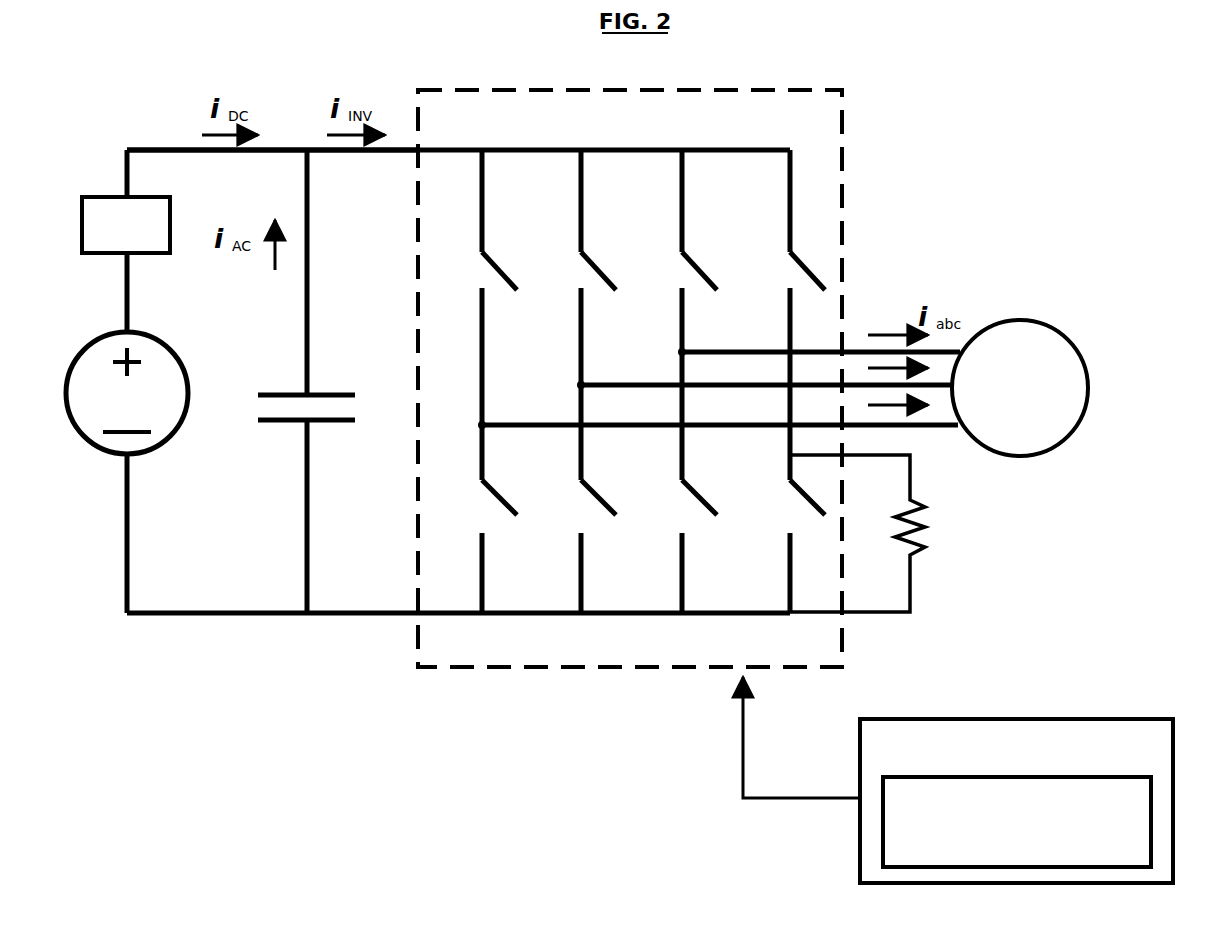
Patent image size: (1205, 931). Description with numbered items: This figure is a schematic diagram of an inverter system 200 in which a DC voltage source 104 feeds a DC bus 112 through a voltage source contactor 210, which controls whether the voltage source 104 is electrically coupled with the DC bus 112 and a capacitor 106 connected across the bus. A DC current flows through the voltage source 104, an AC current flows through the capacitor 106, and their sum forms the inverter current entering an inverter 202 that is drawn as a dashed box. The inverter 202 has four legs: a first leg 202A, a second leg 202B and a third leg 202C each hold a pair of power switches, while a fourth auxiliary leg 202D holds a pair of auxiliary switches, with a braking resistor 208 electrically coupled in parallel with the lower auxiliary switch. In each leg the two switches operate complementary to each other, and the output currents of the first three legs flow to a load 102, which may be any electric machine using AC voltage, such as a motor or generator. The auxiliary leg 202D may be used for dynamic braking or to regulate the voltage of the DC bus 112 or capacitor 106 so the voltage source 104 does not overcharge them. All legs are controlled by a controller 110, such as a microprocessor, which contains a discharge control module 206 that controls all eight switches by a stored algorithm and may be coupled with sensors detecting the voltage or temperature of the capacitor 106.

The DC bus 112 is at (300, 108).
The voltage source contactor 210 is at (126, 225).
The DC voltage source 104 is at (127, 390).
The capacitor 106 is at (309, 381).
The inverter system 200 is at (610, 70).
The inverter 202 is at (705, 411).
The first leg 202A is at (489, 640).
The second leg 202B is at (583, 640).
The third leg 202C is at (683, 640).
The auxiliary leg 202D is at (786, 640).
The load 102 is at (1020, 388).
The braking resistor 208 is at (895, 533).
The controller 110 is at (958, 780).
The discharge control module 206 is at (1017, 822).